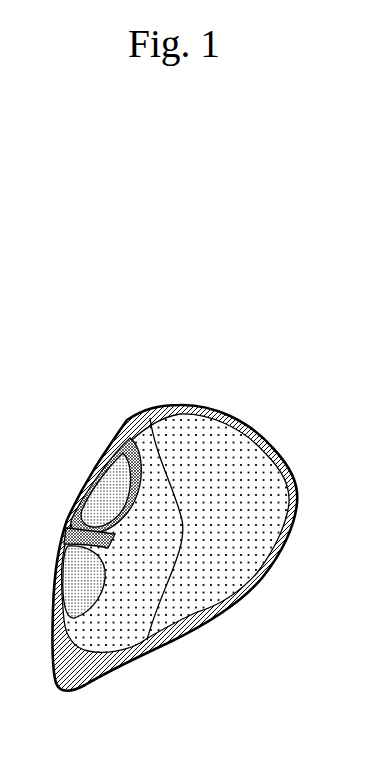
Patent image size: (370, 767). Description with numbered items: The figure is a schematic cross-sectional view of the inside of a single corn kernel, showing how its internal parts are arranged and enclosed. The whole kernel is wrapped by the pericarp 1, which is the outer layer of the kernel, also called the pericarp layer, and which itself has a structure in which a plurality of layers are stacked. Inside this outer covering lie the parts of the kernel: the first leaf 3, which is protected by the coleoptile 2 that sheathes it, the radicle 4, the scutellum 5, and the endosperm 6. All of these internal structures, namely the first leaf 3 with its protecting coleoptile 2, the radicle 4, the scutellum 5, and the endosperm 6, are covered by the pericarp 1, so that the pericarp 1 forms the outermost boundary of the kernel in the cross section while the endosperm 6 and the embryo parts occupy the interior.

The pericarp 1 is at (132, 422).
The coleoptile 2 is at (100, 463).
The first leaf 3 is at (100, 497).
The radicle 4 is at (73, 583).
The scutellum 5 is at (127, 638).
The endosperm 6 is at (223, 570).